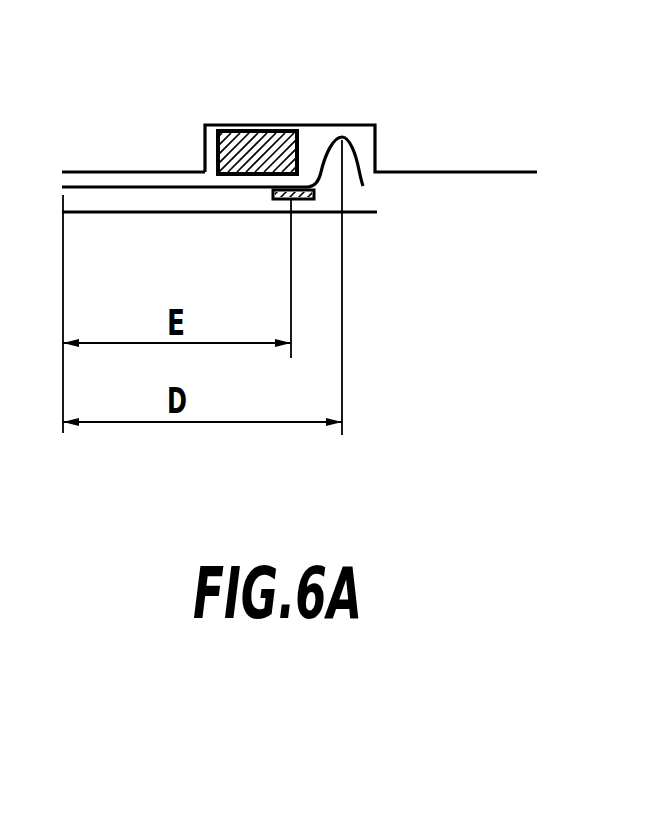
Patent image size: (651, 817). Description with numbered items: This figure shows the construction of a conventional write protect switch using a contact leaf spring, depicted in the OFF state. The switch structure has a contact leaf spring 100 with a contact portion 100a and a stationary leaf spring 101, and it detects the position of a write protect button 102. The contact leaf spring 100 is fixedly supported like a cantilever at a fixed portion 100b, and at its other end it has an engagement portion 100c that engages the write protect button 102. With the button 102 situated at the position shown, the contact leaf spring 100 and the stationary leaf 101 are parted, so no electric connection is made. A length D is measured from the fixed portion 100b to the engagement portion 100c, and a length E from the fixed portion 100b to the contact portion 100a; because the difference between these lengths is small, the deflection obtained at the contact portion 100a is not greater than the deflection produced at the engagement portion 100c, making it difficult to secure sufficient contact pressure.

The contact leaf spring 100 is at (207, 182).
The contact portion 100a is at (290, 207).
The fixed portion 100b is at (79, 183).
The engagement portion 100c is at (345, 137).
The stationary leaf spring 101 is at (130, 214).
The write protect button 102 is at (245, 130).